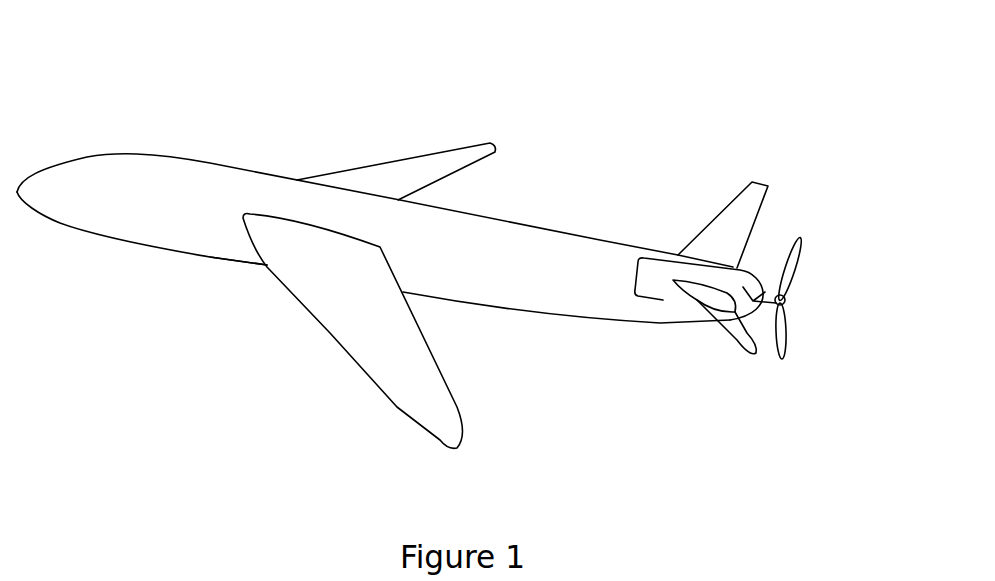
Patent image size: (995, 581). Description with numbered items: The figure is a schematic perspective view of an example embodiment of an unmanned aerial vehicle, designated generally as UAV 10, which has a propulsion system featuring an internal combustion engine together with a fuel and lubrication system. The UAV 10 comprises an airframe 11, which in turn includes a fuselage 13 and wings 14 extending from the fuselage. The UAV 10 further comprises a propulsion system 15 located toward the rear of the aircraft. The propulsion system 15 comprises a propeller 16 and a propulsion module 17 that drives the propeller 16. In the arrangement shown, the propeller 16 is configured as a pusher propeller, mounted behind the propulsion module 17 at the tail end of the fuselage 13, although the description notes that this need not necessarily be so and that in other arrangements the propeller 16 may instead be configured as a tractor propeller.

The unmanned aerial vehicle 10 is at (115, 112).
The airframe 11 is at (133, 245).
The fuselage 13 is at (235, 262).
The wings 14 is at (440, 390).
The propulsion system 15 is at (649, 268).
The propeller 16 is at (786, 322).
The propulsion module 17 is at (670, 295).